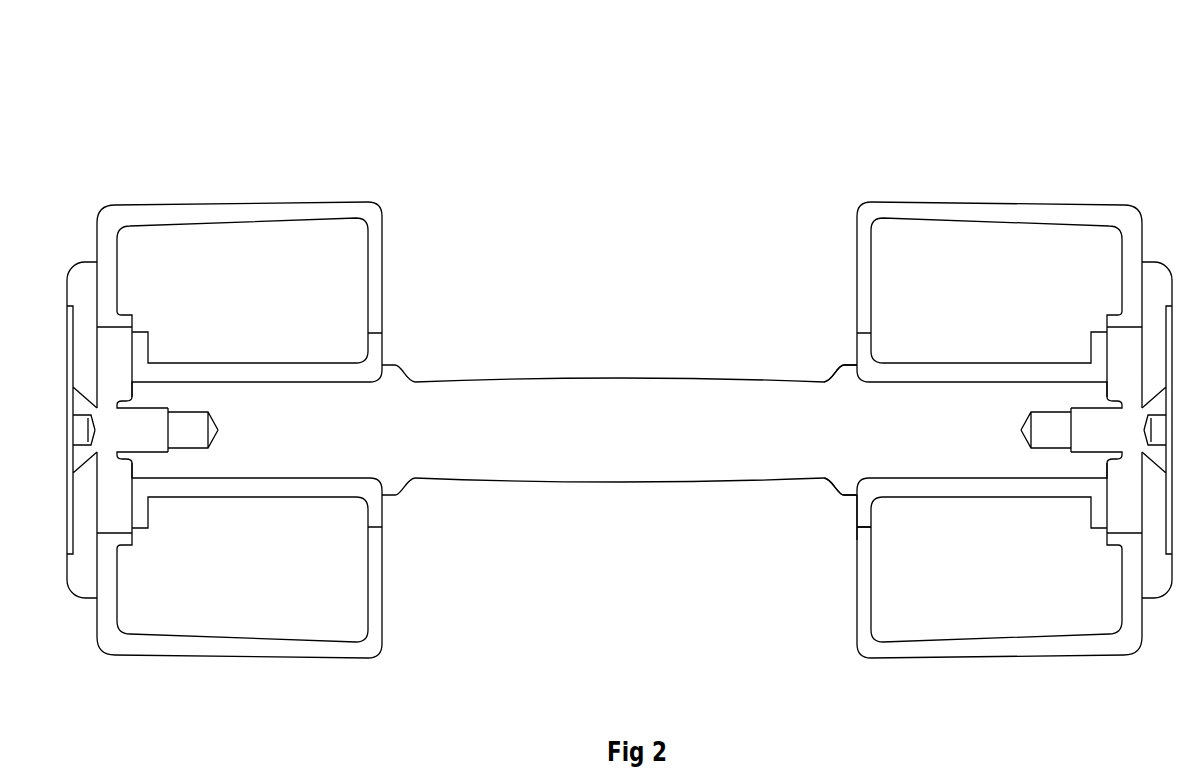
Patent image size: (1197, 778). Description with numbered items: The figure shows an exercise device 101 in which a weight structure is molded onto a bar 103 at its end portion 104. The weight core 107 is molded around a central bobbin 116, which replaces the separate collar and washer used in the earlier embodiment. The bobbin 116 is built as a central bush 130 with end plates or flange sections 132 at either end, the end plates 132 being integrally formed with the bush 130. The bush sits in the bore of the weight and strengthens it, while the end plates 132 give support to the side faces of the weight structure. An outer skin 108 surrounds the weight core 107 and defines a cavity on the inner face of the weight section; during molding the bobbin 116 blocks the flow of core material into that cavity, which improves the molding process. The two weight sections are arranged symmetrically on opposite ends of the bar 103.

The actuator assembly 101 is at (471, 129).
The flexible armature 103 is at (473, 393).
The armature core 104 is at (890, 413).
The weight core 107 is at (988, 268).
The outer skin 108 is at (888, 212).
The central bobbin 116 is at (907, 483).
The housing 130 is at (1040, 485).
The end plates or flange sections 132 is at (855, 520).